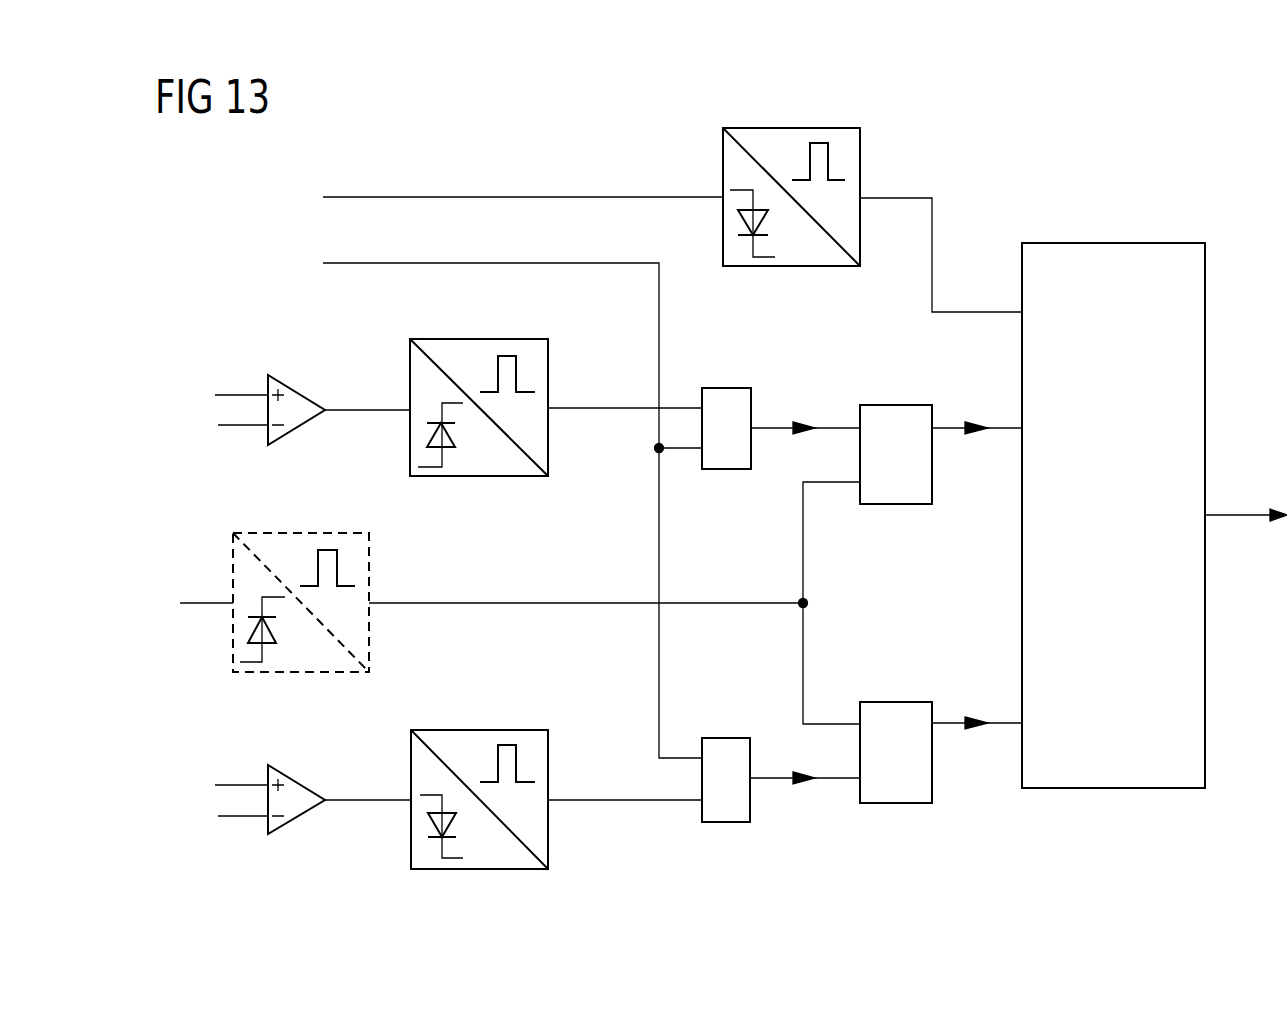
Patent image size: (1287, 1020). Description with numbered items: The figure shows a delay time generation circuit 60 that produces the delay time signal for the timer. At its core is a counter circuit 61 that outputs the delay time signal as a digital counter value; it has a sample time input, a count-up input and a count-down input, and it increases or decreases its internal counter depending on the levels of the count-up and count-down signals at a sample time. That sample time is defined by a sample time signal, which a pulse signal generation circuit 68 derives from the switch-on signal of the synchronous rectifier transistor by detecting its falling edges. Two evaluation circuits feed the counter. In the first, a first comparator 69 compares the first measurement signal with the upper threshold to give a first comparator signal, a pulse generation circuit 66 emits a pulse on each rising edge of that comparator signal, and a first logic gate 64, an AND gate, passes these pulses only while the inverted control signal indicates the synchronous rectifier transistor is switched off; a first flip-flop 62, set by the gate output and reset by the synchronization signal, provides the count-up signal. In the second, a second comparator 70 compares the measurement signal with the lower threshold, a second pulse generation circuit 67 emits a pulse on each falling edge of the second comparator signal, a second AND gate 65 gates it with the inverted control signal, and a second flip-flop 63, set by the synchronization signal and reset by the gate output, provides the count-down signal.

The delay time generation circuit 60 is at (1096, 128).
The counter circuit 61 is at (1113, 243).
The first flip-flop 62 is at (895, 405).
The second flip-flop 63 is at (897, 702).
The first logic gate 64 is at (725, 388).
The second AND gate 65 is at (725, 738).
The pulse generation circuit 66 is at (480, 338).
The second pulse generation circuit 67 is at (480, 730).
The pulse signal generation circuit 68 is at (790, 268).
The first comparator 69 is at (297, 386).
The second comparator 70 is at (297, 533).